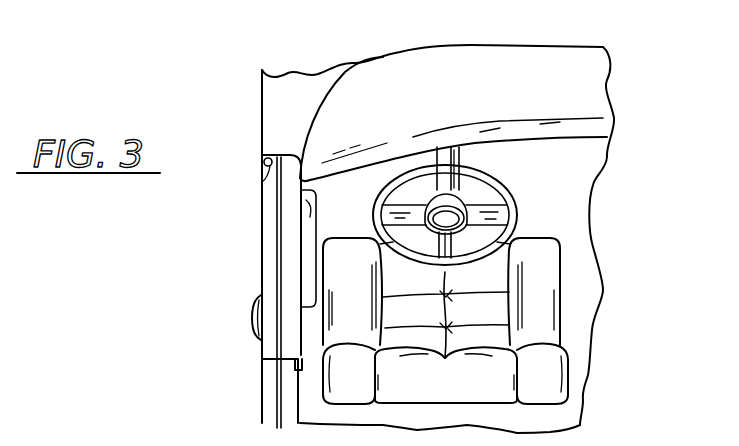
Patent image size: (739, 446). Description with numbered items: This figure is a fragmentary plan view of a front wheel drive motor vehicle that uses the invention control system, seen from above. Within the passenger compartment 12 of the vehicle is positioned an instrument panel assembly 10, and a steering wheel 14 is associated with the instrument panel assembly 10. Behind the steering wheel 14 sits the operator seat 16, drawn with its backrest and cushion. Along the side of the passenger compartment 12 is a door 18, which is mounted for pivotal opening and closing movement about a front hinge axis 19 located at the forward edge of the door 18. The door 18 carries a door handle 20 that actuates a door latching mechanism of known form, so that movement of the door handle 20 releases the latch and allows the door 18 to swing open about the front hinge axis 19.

The instrument panel assembly 10 is at (595, 92).
The passenger compartment 12 is at (568, 189).
The steering wheel 14 is at (513, 208).
The operator seat 16 is at (550, 303).
The door 18 is at (270, 247).
The front hinge axis 19 is at (266, 167).
The door handle 20 is at (255, 318).